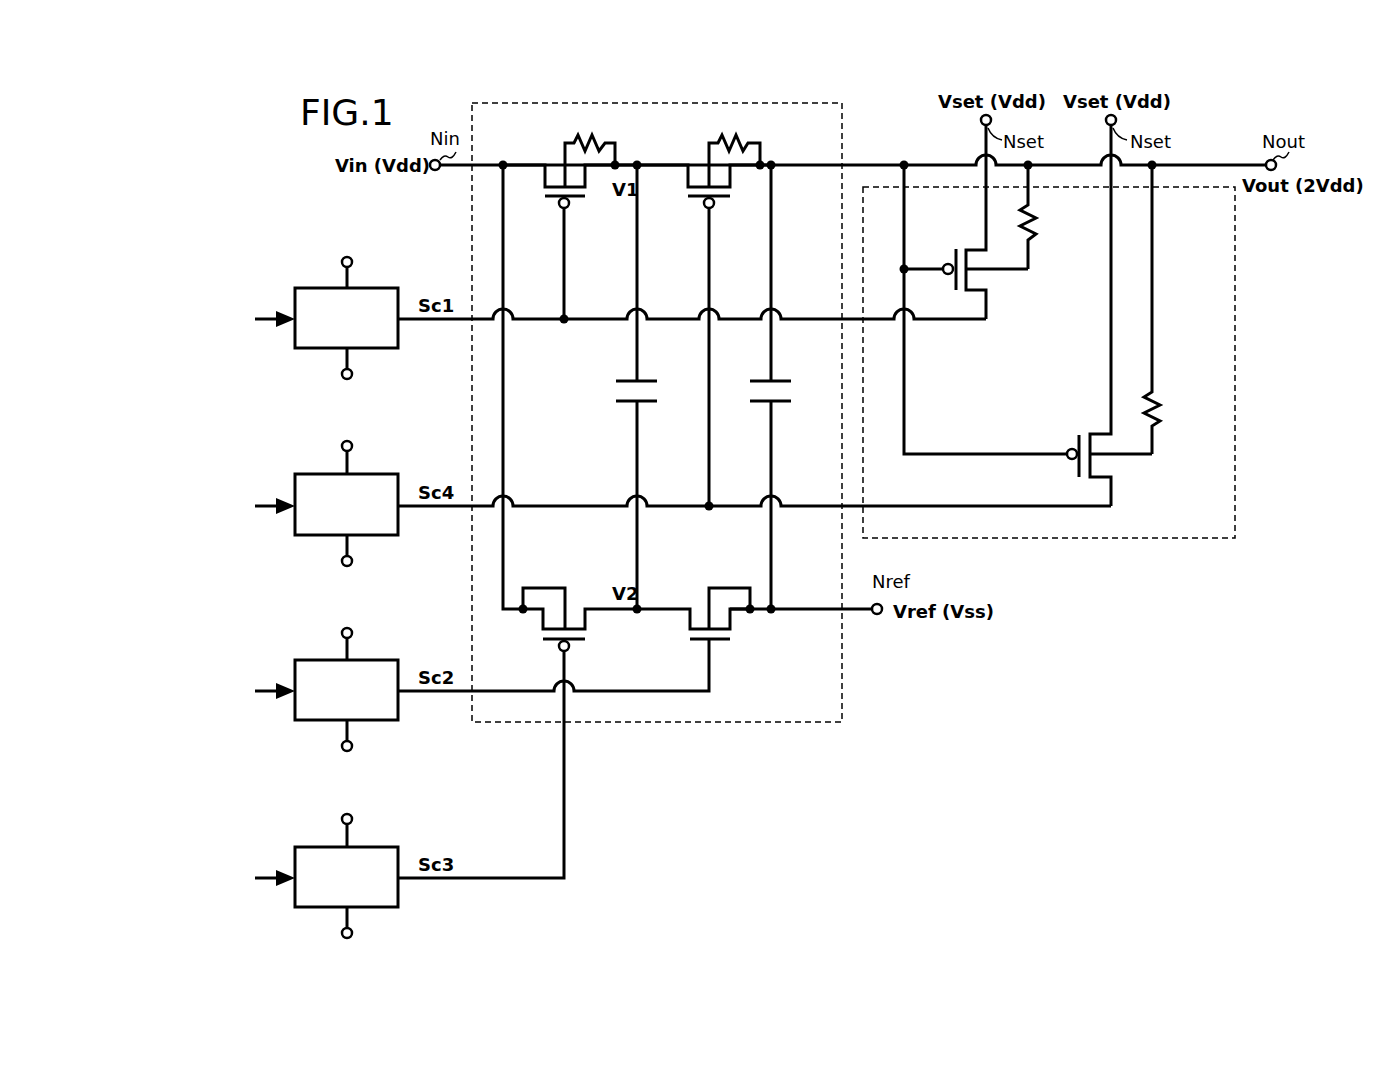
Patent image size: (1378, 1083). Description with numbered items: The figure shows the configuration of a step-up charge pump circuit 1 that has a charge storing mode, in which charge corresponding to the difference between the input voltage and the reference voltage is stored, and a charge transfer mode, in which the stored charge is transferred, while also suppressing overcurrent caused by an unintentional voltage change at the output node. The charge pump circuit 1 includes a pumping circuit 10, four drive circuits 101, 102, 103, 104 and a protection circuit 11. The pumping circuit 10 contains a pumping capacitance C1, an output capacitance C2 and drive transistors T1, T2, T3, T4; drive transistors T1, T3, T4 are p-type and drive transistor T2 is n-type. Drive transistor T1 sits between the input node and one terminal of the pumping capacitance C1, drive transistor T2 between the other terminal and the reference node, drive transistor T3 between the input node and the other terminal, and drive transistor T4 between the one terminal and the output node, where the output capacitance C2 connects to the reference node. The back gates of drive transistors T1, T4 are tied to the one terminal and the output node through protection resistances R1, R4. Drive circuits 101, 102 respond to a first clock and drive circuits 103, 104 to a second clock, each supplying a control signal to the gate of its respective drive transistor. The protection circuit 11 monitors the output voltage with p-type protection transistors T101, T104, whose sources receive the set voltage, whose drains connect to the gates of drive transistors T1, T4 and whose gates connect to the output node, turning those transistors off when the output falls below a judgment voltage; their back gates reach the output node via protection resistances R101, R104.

The charge pump circuit 1 is at (1166, 844).
The pumping circuit 10 is at (790, 722).
The protection circuit 11 is at (1153, 540).
The drive circuit 101 is at (368, 288).
The drive circuit 102 is at (368, 660).
The drive circuit 103 is at (368, 847).
The drive circuit 104 is at (368, 474).
The drive transistor T1 is at (553, 207).
The drive transistor T2 is at (698, 645).
The drive transistor T3 is at (553, 650).
The drive transistor T4 is at (698, 207).
The protection resistance R1 is at (600, 143).
The protection resistance R4 is at (745, 143).
The pumping capacitance C1 is at (628, 379).
The output capacitance C2 is at (785, 403).
The protection transistor T101 is at (976, 248).
The protection transistor T104 is at (1100, 433).
The protection resistance R101 is at (1030, 238).
The protection resistance R104 is at (1154, 424).